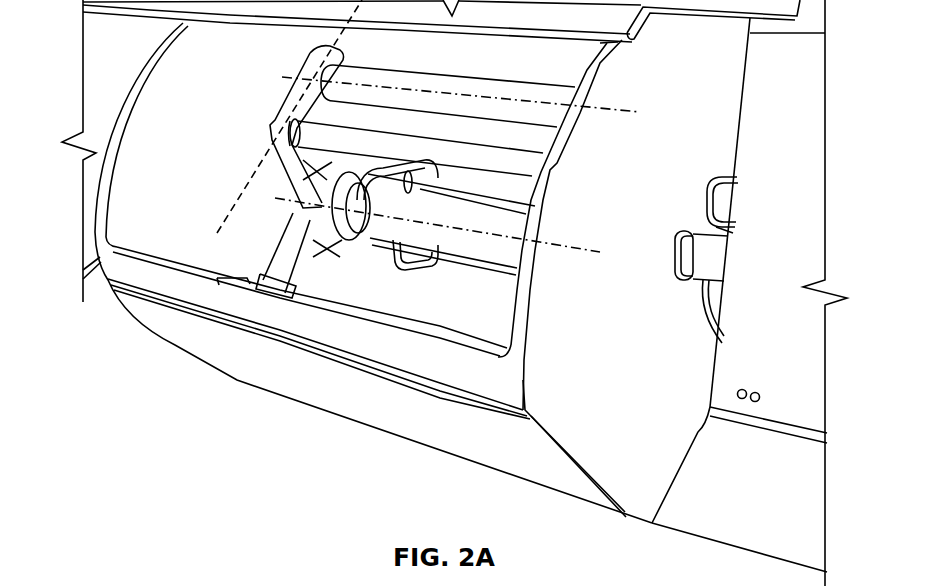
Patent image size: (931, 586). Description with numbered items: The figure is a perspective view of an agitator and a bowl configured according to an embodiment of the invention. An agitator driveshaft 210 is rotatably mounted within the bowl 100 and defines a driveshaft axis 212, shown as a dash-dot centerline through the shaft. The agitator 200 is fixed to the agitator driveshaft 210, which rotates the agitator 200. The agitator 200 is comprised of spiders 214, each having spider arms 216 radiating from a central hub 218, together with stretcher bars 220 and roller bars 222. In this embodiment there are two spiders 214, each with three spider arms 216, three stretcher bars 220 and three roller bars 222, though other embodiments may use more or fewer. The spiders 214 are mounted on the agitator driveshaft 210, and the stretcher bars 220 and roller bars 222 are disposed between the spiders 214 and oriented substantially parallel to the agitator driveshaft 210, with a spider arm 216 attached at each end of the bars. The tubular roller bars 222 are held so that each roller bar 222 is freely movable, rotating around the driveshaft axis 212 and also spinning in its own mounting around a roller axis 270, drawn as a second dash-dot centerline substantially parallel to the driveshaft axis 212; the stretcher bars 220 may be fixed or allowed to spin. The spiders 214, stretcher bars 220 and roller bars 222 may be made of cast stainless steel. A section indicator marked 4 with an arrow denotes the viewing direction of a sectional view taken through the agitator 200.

The bowl 100 is at (173, 328).
The agitator 200 is at (428, 227).
The agitator driveshaft 210 is at (428, 238).
The driveshaft axis 212 is at (590, 248).
The spider 214 is at (300, 284).
The spider arm 216 is at (280, 132).
The central hub 218 is at (340, 222).
The stretcher bar 220 is at (535, 157).
The roller bar 222 is at (497, 93).
The roller axis 270 is at (618, 110).
The section line 4- 4 is at (217, 241).